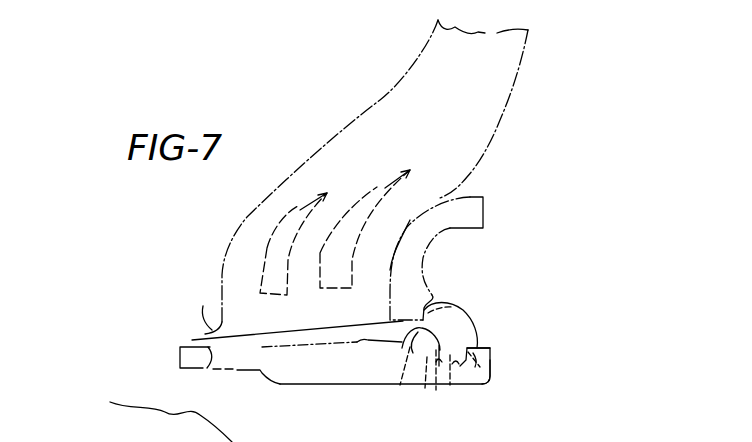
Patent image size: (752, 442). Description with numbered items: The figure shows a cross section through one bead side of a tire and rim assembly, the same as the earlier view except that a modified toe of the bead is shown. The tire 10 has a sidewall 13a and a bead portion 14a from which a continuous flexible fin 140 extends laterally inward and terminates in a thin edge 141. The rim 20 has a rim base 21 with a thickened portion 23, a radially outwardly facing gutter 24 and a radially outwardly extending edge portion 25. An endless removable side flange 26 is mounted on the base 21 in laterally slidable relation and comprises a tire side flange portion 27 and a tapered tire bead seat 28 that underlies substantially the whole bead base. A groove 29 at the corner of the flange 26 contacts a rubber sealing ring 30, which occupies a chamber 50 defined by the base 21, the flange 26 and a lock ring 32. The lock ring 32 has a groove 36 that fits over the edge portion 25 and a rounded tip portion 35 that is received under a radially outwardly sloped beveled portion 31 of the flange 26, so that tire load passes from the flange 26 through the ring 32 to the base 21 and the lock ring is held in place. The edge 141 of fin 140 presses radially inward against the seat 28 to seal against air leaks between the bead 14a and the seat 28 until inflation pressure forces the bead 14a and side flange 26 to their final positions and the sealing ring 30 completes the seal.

The tire 10 is at (493, 143).
The sidewall 13a is at (513, 92).
The bead portion 14a is at (272, 243).
The removable side flange 26 is at (482, 190).
The tire side flange portion 27 is at (473, 218).
The rounded tip portion 35 is at (437, 287).
The beveled portion 31 is at (448, 309).
The lock ring 32 is at (480, 320).
The edge portion 25 is at (485, 357).
The groove 36 is at (482, 368).
The thin edge 141 is at (192, 340).
The fin 140 is at (197, 315).
The rim 20 is at (278, 397).
The tapered tire bead seat 28 is at (207, 368).
The rim base 21 is at (242, 372).
The thickened portion 23 is at (327, 385).
The groove 29 is at (400, 385).
The sealing ring 30 is at (425, 392).
The chamber 50 is at (436, 392).
The gutter 24 is at (452, 372).